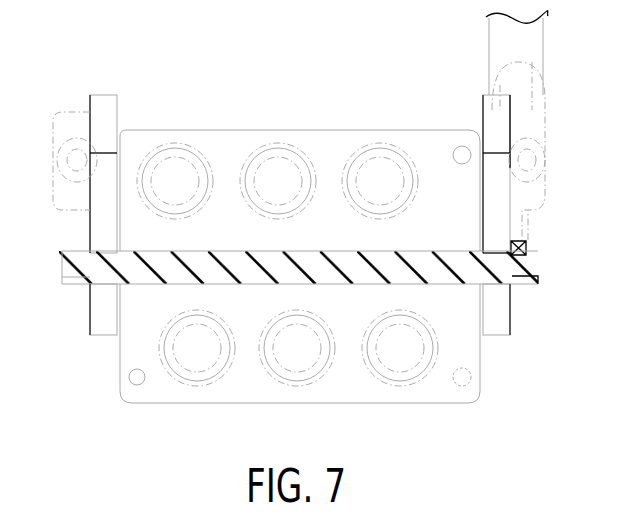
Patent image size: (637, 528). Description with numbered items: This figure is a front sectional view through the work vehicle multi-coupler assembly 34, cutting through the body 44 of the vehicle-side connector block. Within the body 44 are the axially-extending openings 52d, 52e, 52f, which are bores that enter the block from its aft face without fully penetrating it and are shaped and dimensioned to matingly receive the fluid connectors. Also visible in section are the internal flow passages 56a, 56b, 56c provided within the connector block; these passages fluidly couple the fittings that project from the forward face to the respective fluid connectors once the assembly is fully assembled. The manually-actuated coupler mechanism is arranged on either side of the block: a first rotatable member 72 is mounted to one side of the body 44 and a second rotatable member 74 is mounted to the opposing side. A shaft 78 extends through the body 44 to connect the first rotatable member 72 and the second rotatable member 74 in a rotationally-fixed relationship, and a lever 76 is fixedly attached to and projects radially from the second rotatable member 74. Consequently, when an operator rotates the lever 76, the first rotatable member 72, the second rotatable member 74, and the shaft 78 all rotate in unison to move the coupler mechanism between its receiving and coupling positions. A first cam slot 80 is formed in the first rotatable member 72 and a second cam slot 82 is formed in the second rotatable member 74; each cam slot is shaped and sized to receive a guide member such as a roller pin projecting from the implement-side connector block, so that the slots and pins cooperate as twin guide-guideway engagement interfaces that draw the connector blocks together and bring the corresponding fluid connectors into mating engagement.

The work vehicle multi-coupler assembly 34 is at (166, 109).
The body 44 is at (245, 130).
The internal flow passage 56a is at (177, 180).
The internal flow passage 56b is at (281, 180).
The internal flow passage 56c is at (383, 178).
The opening 52d is at (197, 355).
The opening 52e is at (297, 357).
The opening 52f is at (400, 357).
The first rotatable member 72 is at (105, 93).
The second rotatable member 74 is at (495, 115).
The lever 76 is at (527, 45).
The shaft 78 is at (317, 268).
The first cam slot 80 is at (100, 155).
The second cam slot 82 is at (497, 155).